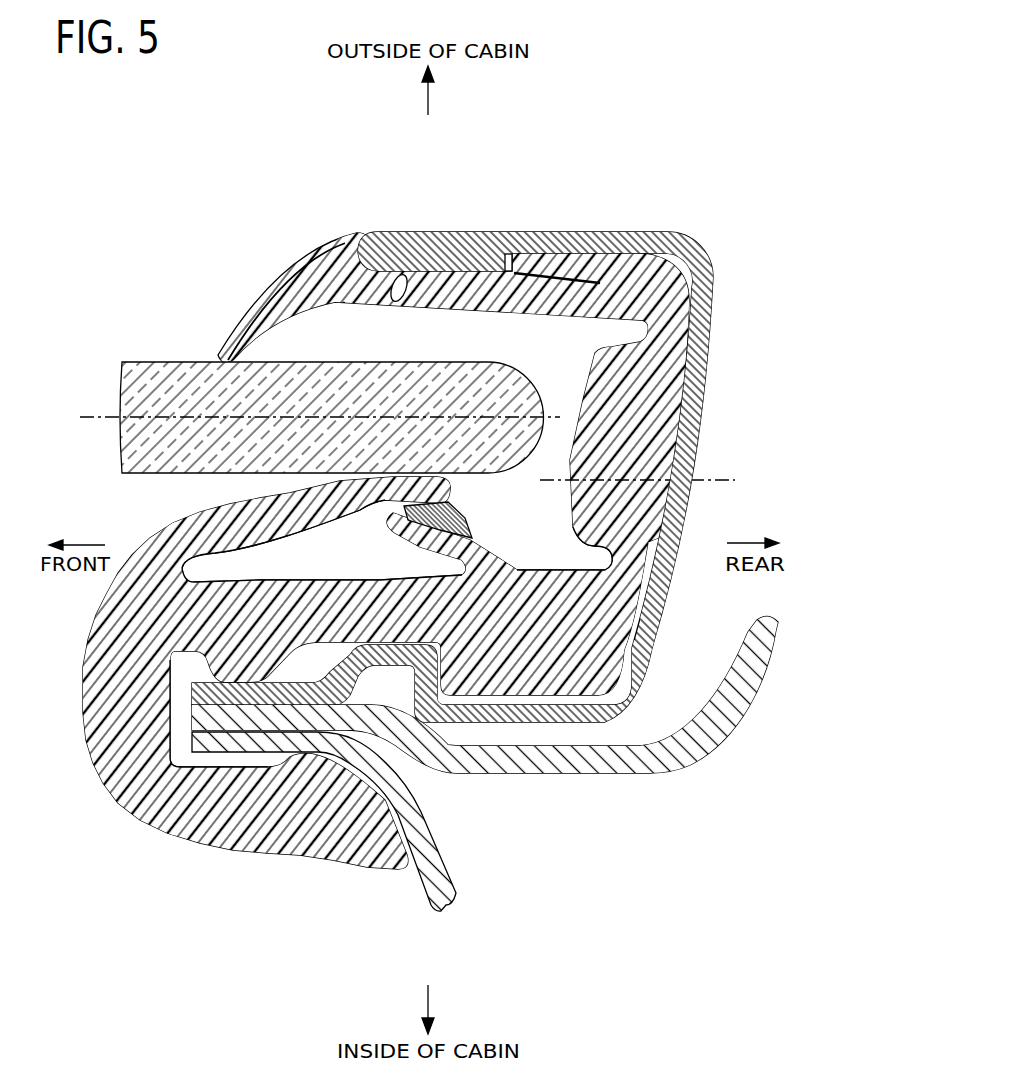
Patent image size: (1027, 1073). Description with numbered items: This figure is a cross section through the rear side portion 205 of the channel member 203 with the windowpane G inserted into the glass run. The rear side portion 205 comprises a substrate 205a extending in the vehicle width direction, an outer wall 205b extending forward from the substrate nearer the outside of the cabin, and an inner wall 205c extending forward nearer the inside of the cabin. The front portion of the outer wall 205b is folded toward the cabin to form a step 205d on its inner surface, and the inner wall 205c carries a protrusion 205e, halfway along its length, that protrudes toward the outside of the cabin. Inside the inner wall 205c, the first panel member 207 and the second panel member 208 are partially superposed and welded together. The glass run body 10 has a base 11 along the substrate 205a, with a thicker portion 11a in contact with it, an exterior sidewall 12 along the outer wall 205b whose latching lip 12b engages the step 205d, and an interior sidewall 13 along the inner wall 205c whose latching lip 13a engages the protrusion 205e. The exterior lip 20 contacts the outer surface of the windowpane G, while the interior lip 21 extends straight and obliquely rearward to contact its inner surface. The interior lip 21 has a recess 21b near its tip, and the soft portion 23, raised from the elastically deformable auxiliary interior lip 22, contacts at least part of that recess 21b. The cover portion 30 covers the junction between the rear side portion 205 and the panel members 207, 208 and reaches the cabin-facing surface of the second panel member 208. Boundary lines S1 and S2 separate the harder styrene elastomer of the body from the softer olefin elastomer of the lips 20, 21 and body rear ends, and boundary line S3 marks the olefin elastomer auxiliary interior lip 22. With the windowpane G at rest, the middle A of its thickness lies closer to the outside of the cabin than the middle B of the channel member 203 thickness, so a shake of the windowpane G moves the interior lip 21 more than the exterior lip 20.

The glass run body 10 is at (400, 536).
The base 11 is at (665, 560).
The thicker portion 11a is at (686, 410).
The exterior sidewall 12 is at (503, 238).
The latching lip 12b is at (520, 286).
The interior sidewall 13 is at (318, 645).
The latching lip 13a is at (488, 700).
The exterior lip 20 is at (240, 323).
The interior lip 21 is at (262, 499).
The recess 21b is at (388, 501).
The auxiliary interior lip 22 is at (428, 553).
The soft portion 23 is at (458, 511).
The cover portion 30 is at (136, 824).
The channel member 203 is at (492, 511).
The rear side portion 205 is at (492, 485).
The substrate 205a is at (713, 347).
The outer wall 205b is at (572, 232).
The inner wall 205c is at (530, 724).
The step 205d is at (512, 252).
The protrusion 205e is at (456, 690).
The first panel member 207 is at (708, 750).
The second panel member 208 is at (454, 892).
The middle of the thickness of the windowpane A is at (97, 412).
The middle of the thickness of the channel member B is at (707, 482).
The windowpane G is at (130, 471).
The boundary line S1 is at (392, 275).
The boundary line S2 is at (212, 634).
The boundary line S3 is at (516, 566).